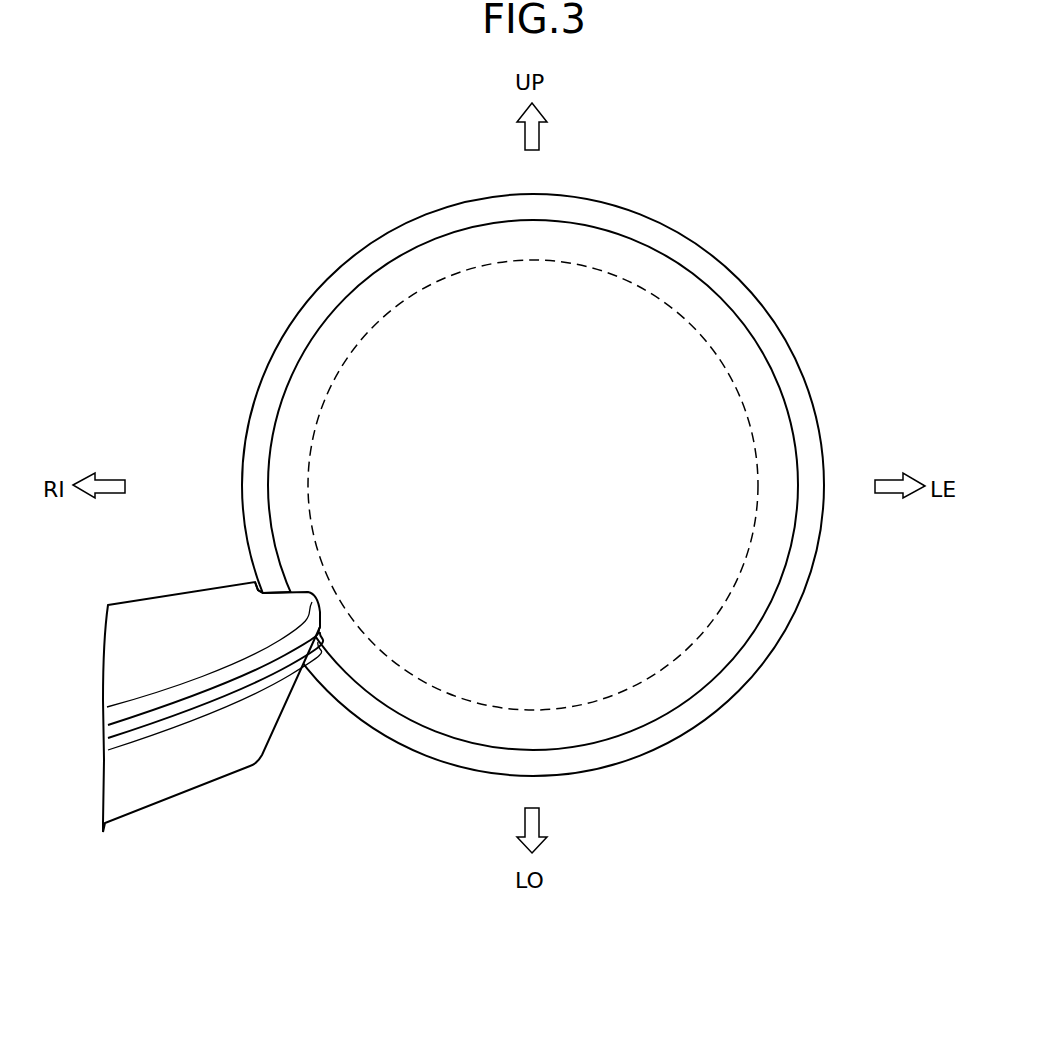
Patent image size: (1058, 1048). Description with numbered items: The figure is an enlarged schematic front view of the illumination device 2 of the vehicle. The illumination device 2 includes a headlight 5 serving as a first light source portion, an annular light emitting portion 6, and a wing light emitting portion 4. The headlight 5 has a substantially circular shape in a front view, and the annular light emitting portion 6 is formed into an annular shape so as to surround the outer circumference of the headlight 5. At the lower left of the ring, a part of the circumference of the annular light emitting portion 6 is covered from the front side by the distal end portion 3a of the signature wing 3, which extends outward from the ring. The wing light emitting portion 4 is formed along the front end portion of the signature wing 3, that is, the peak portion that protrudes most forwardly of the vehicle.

The illumination device 2 is at (682, 233).
The signature wing 3 is at (187, 615).
The distal end portion 3a is at (300, 583).
The wing light emitting portion 4 is at (197, 702).
The headlight 5 is at (663, 667).
The annular light emitting portion 6 is at (788, 595).